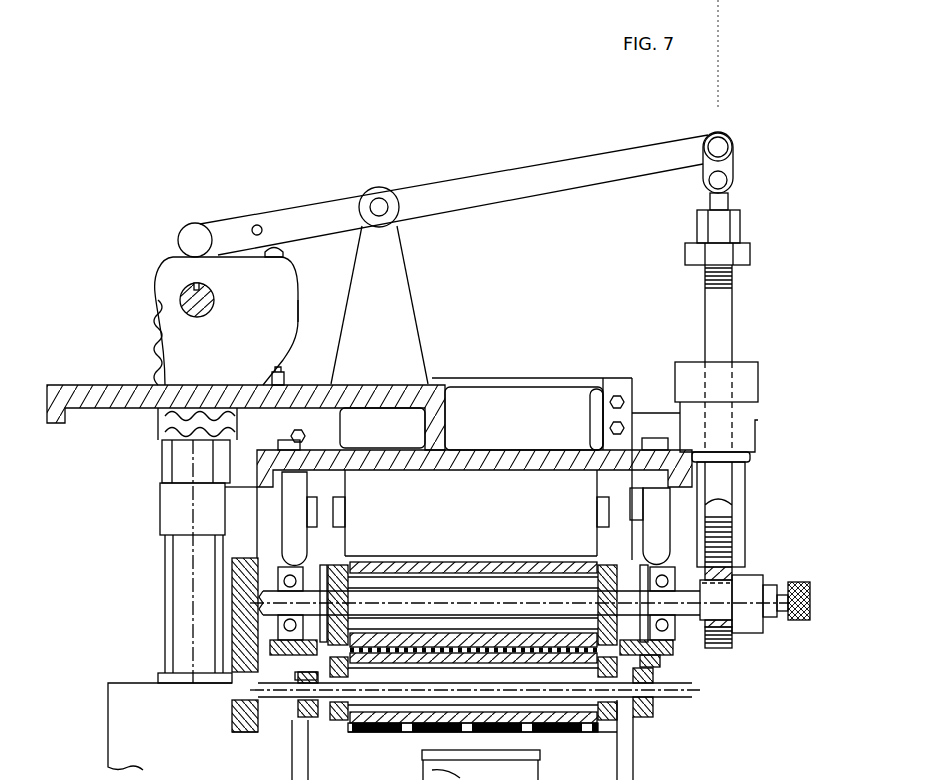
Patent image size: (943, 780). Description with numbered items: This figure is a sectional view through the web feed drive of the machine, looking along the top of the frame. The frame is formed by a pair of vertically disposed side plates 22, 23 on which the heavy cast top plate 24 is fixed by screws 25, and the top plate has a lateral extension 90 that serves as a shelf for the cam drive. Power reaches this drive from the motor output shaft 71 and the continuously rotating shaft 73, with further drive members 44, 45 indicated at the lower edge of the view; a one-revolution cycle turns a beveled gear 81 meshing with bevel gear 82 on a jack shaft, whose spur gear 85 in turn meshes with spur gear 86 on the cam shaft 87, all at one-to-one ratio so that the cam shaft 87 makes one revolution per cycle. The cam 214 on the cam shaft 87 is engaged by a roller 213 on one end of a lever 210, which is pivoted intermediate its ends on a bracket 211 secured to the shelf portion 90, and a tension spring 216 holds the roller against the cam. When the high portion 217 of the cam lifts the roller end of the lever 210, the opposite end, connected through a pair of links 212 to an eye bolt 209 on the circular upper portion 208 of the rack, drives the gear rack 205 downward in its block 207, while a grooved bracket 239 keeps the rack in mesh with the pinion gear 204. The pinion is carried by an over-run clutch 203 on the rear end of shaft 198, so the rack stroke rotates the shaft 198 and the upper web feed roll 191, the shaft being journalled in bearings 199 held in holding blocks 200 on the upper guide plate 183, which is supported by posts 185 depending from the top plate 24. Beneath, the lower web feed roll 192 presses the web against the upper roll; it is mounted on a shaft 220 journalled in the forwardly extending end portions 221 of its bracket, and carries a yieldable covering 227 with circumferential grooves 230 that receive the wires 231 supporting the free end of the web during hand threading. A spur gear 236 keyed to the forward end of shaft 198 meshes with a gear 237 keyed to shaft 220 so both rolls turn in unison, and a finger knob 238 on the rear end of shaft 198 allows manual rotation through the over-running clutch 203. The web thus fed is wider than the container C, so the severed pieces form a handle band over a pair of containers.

The lever 210 is at (598, 176).
The roller 213 is at (193, 229).
The tension spring 216 is at (270, 249).
The cam 214 is at (250, 344).
The cam shaft 87 is at (205, 297).
The high portion of the cam 217 is at (298, 328).
The spur gear 86 is at (155, 312).
The spur gear 85 is at (152, 374).
The bevel gear 82 is at (152, 356).
The lateral extension of the top plate 90 is at (93, 385).
The beveled gear 81 is at (165, 441).
The bracket 211 is at (386, 346).
The top plate 24 is at (519, 458).
The screws 25 is at (306, 436).
The links 212 is at (728, 168).
The eye bolt 209 is at (725, 203).
The upper portion of the rack 208 is at (726, 337).
The block 207 is at (752, 438).
The bracket 239 is at (740, 483).
The gear rack 205 is at (722, 517).
The posts 185 is at (285, 518).
The spur gear 236 is at (243, 570).
The gear 237 is at (232, 716).
The bearings 199 is at (296, 580).
The upper web feed roll 191 is at (439, 563).
The shaft 198 is at (512, 595).
The wires 231 is at (428, 645).
The holding blocks 200 is at (686, 664).
The guide plate 183 is at (652, 657).
The shaft 220 is at (653, 690).
The forwardly extending end portions of the bracket 221 is at (298, 710).
The over-run clutch 203 is at (748, 578).
The pinion gear 204 is at (730, 648).
The finger knob 238 is at (799, 582).
The side plate 22 is at (292, 740).
The covering 227 is at (353, 732).
The grooves 230 is at (380, 730).
The lower web feed roll 192 is at (565, 730).
The side plate 23 is at (627, 749).
The container C is at (497, 779).
The output shaft 71 is at (101, 777).
The element 45 is at (152, 777).
The element 44 is at (204, 777).
The shaft 73 is at (254, 777).